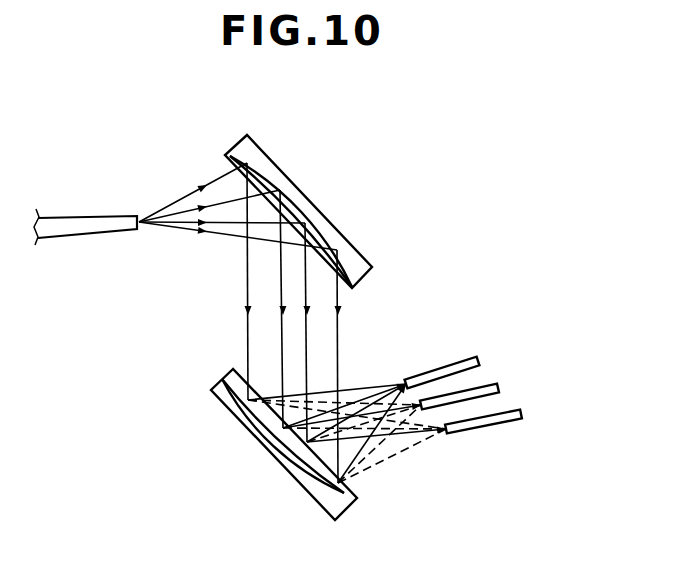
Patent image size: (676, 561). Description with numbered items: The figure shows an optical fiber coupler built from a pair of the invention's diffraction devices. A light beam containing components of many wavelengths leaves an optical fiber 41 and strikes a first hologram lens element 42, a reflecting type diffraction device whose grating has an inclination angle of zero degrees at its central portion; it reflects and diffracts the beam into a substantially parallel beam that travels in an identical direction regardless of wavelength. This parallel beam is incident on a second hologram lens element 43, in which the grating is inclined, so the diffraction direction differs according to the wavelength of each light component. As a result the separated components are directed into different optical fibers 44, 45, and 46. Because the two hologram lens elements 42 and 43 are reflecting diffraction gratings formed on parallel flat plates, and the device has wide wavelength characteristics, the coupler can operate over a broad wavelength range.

The optical fiber 41 is at (86, 216).
The first hologram lens element 42 is at (355, 248).
The second hologram lens element 43 is at (312, 492).
The optical fiber 44 is at (478, 362).
The optical fiber 45 is at (498, 386).
The optical fiber 46 is at (522, 413).